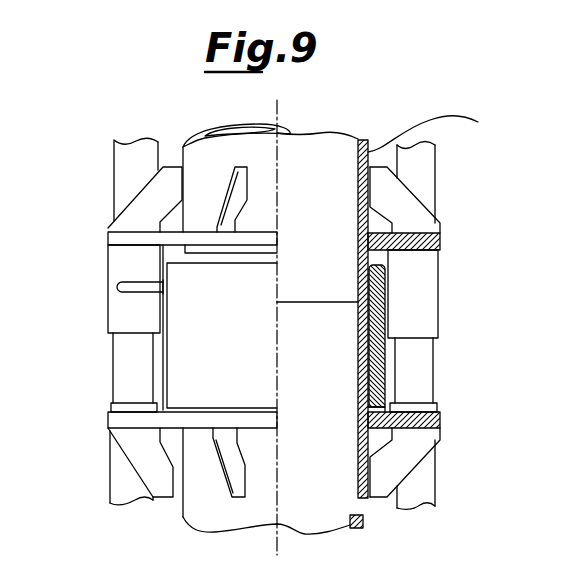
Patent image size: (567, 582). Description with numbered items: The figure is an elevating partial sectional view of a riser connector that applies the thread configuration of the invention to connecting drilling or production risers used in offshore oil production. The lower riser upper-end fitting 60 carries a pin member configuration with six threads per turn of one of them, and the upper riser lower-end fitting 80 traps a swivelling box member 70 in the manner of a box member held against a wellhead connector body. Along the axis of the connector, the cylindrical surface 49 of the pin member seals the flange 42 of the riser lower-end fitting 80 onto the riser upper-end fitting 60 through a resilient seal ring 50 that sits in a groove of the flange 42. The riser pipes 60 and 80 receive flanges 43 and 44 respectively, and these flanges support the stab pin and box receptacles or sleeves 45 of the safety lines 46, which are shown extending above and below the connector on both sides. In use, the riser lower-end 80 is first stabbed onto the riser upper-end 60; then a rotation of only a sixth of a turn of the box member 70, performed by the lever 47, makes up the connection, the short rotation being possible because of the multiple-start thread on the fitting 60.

The flange 42 is at (392, 290).
The flange 43 is at (440, 422).
The flange 44 is at (112, 238).
The stab pin and box receptacles or sleeves 45 is at (120, 267).
The safety lines 46 is at (127, 160).
The lever 47 is at (135, 290).
The cylindrical surface 49 is at (358, 308).
The resilient seal ring 50 is at (385, 310).
The lower riser upper-end fitting 60 is at (357, 528).
The swivelling box member 70 is at (385, 363).
The upper riser lower-end fitting 80 is at (439, 131).